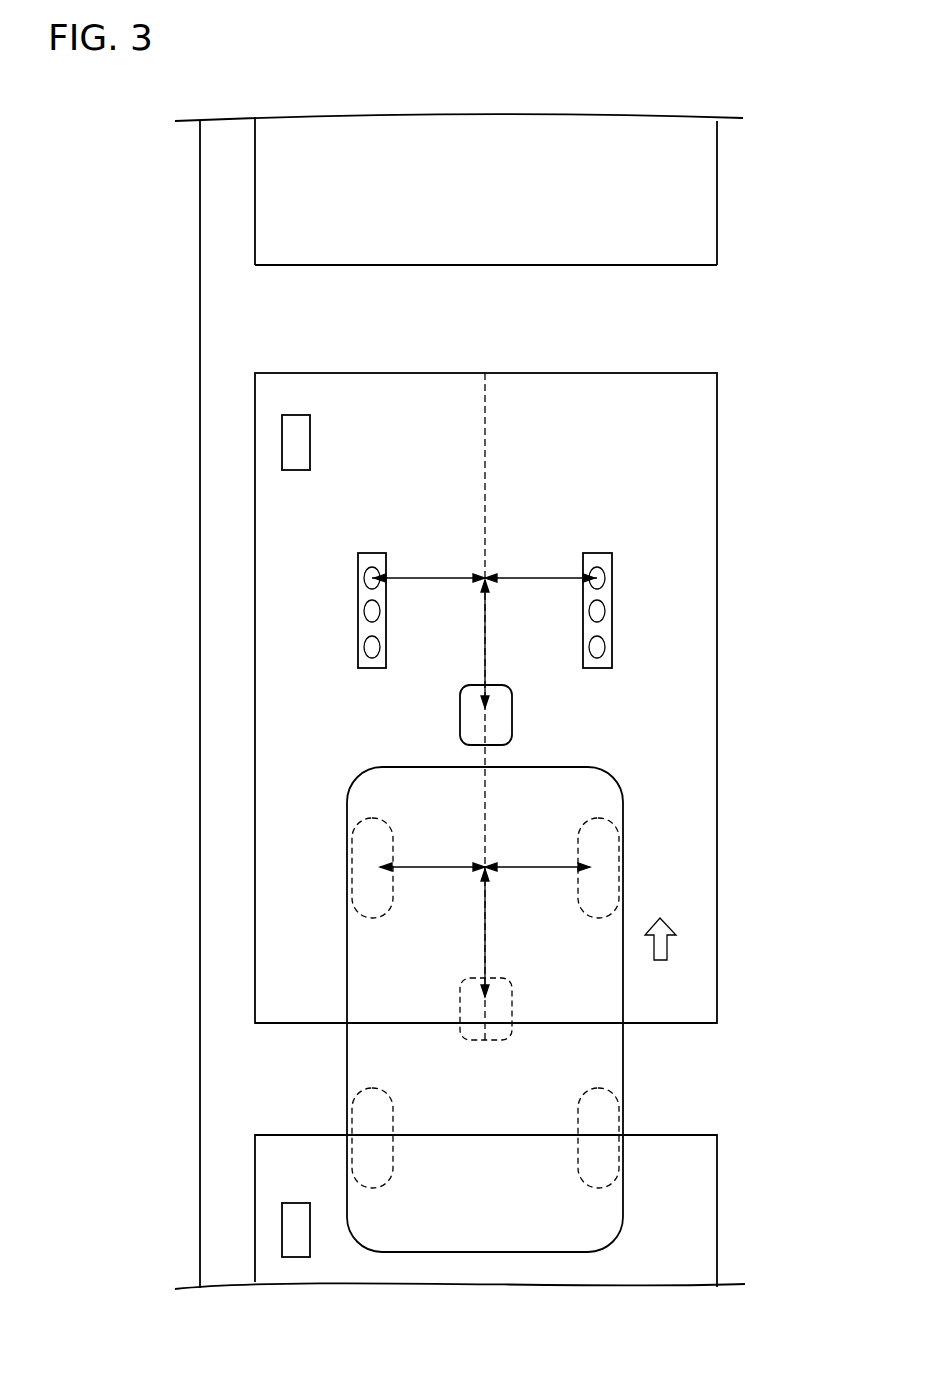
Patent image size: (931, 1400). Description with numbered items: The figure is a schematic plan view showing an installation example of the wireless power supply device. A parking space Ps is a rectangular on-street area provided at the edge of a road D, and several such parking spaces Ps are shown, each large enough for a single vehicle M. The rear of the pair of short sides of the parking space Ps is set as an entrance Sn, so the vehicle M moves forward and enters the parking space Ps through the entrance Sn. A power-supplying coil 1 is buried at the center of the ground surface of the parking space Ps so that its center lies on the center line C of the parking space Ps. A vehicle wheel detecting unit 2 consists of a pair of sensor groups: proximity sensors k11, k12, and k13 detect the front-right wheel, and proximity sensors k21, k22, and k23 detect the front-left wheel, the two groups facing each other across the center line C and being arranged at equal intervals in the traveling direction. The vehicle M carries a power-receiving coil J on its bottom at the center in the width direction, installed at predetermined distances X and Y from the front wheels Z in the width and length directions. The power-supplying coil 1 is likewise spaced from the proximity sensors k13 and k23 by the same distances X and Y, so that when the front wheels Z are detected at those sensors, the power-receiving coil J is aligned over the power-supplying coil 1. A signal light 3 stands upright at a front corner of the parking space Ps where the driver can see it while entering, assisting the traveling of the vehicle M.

The road D is at (200, 307).
The parking space Ps is at (717, 217).
The signal light 3 is at (312, 441).
The center line C is at (487, 452).
The vehicle wheel detecting unit 2 is at (376, 553).
The proximity sensor k23 is at (360, 578).
The proximity sensor k22 is at (360, 611).
The proximity sensor k21 is at (360, 647).
The proximity sensor k13 is at (612, 578).
The proximity sensor k12 is at (612, 611).
The proximity sensor k11 is at (612, 647).
The distance X is at (428, 572).
The distance Y is at (490, 932).
The power-supplying coil 1 is at (460, 717).
The vehicle M is at (347, 808).
The front wheels Z is at (373, 918).
The power-receiving coil J is at (460, 1000).
The entrance Sn is at (665, 1025).